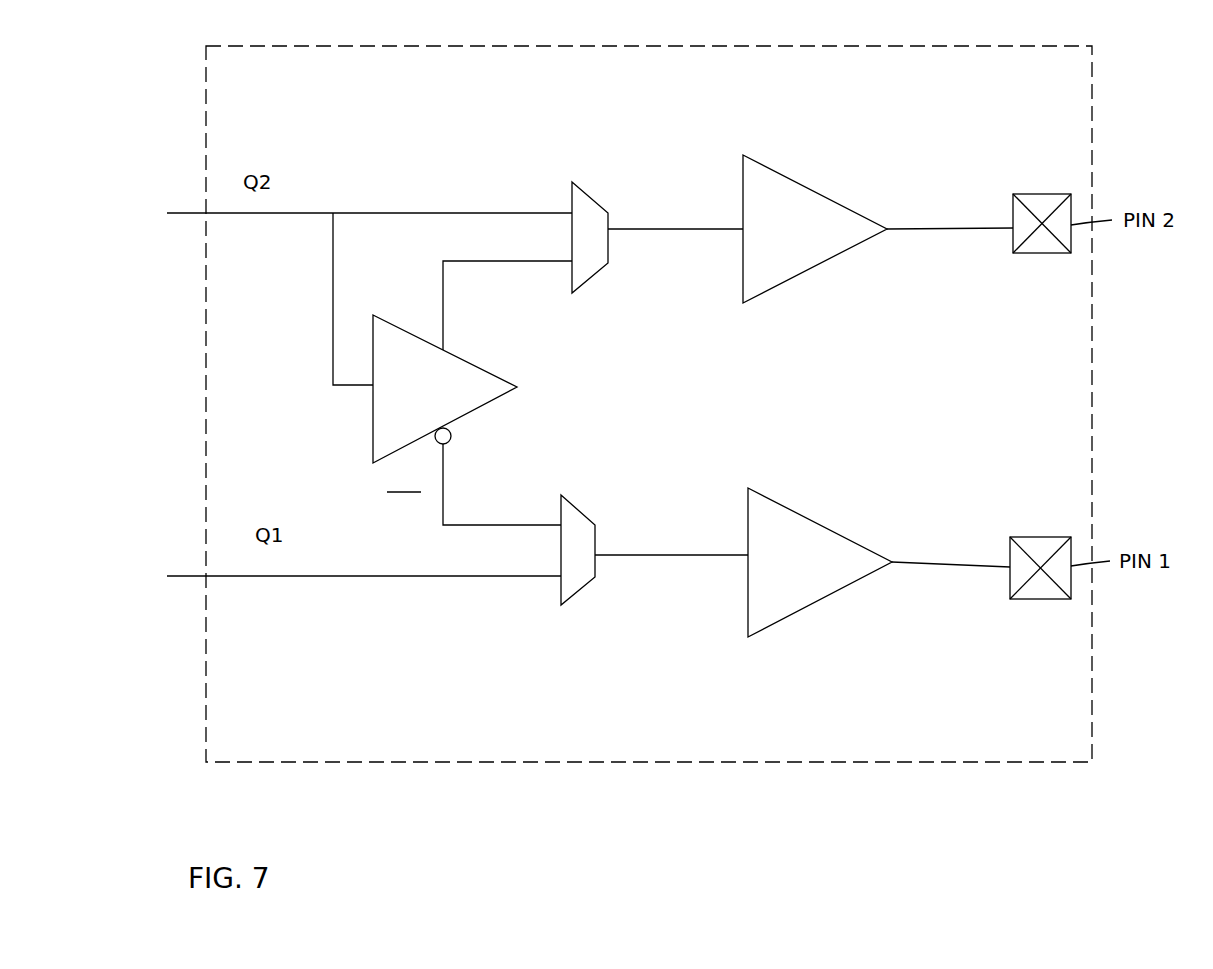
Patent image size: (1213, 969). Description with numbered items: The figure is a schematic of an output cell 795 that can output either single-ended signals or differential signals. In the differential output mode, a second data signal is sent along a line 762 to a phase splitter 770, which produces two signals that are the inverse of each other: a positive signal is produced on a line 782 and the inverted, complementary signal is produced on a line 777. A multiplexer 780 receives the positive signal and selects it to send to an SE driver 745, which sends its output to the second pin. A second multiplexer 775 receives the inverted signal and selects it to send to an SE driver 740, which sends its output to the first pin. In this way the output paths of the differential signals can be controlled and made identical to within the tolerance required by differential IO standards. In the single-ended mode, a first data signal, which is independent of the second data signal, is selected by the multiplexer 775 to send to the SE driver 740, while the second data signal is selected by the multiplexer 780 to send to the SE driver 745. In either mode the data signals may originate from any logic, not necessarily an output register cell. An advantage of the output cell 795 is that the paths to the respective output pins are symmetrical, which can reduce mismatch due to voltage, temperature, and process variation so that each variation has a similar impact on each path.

The output cell 795 is at (649, 404).
The multiplexer 780 is at (572, 182).
The SE driver 745 is at (742, 168).
The line 762 is at (333, 308).
The line 782 is at (443, 318).
The phase splitter 770 is at (520, 387).
The line 777 is at (443, 490).
The multiplexer 775 is at (573, 593).
The SE driver 740 is at (813, 603).